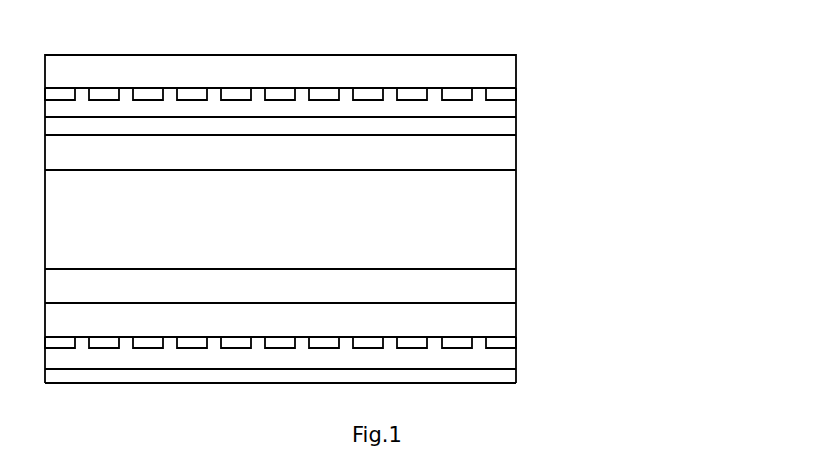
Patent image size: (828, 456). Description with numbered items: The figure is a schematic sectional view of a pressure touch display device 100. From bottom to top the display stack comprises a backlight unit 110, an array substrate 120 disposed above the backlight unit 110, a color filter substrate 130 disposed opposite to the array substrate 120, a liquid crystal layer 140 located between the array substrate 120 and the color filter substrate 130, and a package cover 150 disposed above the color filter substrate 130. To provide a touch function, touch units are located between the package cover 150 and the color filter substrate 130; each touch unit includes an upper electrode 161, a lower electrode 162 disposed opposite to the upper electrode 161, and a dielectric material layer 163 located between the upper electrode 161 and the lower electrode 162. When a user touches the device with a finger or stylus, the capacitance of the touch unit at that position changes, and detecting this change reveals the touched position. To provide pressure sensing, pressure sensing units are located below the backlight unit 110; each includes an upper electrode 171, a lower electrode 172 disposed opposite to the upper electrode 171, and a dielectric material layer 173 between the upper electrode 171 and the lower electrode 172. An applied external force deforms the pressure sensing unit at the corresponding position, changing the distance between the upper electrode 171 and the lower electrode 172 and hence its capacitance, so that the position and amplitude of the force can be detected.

The pressure touch display device 100 is at (60, 24).
The backlight unit 110 is at (280, 322).
The array substrate 120 is at (280, 288).
The color filter substrate 130 is at (280, 154).
The liquid crystal layer 140 is at (280, 239).
The package cover 150 is at (280, 73).
The upper electrode 161 is at (500, 94).
The lower electrode 162 is at (498, 126).
The dielectric material layer 163 is at (498, 111).
The upper electrode 171 is at (498, 342).
The lower electrode 172 is at (498, 377).
The dielectric material layer 173 is at (498, 358).